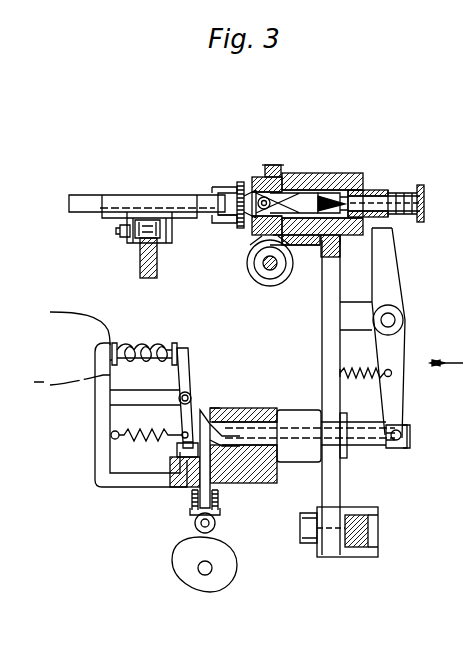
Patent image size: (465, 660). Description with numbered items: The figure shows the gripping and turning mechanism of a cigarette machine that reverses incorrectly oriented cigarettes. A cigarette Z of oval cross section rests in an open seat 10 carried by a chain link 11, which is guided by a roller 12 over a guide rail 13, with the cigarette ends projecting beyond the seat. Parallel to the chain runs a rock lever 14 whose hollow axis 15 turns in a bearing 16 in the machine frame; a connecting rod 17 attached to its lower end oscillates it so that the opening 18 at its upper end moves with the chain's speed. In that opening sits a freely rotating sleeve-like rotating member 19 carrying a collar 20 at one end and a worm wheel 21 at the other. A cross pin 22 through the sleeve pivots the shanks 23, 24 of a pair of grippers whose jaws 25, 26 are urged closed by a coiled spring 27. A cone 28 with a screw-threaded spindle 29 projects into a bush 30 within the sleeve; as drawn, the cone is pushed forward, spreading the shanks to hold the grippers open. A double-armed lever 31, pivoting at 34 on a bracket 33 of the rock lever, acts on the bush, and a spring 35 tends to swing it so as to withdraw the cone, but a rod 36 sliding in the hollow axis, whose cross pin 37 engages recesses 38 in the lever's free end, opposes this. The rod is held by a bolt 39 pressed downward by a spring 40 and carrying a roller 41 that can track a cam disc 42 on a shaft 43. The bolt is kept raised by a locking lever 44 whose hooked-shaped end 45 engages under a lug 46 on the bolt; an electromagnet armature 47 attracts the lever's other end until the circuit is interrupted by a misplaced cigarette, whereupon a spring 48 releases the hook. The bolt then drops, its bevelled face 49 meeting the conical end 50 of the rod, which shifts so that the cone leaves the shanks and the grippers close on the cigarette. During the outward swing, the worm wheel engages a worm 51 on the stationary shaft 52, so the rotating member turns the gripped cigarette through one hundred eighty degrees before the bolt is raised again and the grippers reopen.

The cigarette Z is at (76, 205).
The open seat 10 is at (115, 207).
The chain link 11 is at (132, 232).
The roller 12 is at (155, 238).
The guide rail 13 is at (156, 272).
The rock lever 14 is at (331, 308).
The hollow axis 15 is at (253, 420).
The bearing 16 is at (254, 458).
The connecting rod 17 is at (350, 548).
The opening 18 is at (316, 180).
The rotating member 19 is at (263, 173).
The collar 20 is at (355, 236).
The worm wheel 21 is at (256, 230).
The cross pin 22 is at (256, 192).
The gripper shank 23 is at (286, 235).
The gripper shank 24 is at (281, 170).
The gripper jaw 25 is at (217, 188).
The gripper jaw 26 is at (221, 218).
The spring 27 is at (237, 186).
The cone 28 is at (343, 203).
The screw-threaded spindle 29 is at (412, 207).
The bush 30 is at (383, 196).
The lever 31 is at (390, 277).
The bracket 33 is at (345, 327).
The pivot 34 is at (392, 320).
The spring 35 is at (350, 377).
The rod 36 is at (350, 433).
The cross pin 37 is at (393, 448).
The recess 38 is at (402, 432).
The bolt 39 is at (195, 490).
The spring 40 is at (221, 504).
The roller 41 is at (195, 524).
The cam disc 42 is at (182, 559).
The shaft 43 is at (201, 573).
The locking lever 44 is at (186, 376).
The hooked-shaped end 45 is at (185, 443).
The lug 46 is at (196, 403).
The armature 47 is at (178, 350).
The spring 48 is at (138, 440).
The bevelled face 49 is at (208, 412).
The conical end 50 is at (214, 440).
The worm 51 is at (258, 281).
The shaft 52 is at (274, 270).